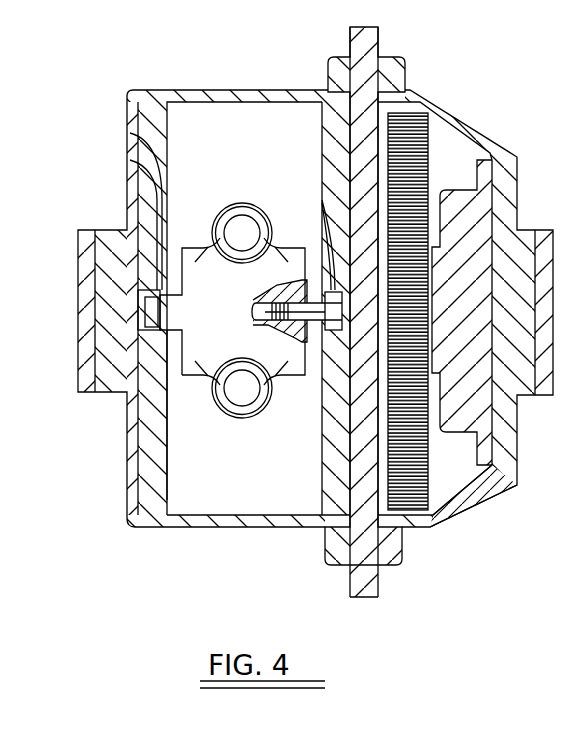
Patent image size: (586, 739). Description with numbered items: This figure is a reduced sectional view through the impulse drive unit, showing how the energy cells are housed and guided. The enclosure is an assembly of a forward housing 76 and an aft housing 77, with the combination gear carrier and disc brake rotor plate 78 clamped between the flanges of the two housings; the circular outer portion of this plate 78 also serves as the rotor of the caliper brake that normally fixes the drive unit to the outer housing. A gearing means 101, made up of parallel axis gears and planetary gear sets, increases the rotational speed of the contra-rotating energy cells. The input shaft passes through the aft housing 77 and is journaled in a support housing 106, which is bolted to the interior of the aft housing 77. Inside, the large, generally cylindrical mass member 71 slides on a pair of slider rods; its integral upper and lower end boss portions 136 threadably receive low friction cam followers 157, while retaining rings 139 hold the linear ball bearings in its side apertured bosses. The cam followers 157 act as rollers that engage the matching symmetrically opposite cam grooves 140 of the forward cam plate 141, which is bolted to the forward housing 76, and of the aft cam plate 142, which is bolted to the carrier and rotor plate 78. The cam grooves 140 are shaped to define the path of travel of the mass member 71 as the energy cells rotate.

The mass member 71 is at (186, 404).
The forward housing 76 is at (185, 528).
The aft housing 77 is at (478, 497).
The combination gear carrier and disc brake rotor plate 78 is at (378, 590).
The gearing means 101 is at (412, 110).
The support housing 106 is at (457, 188).
The end boss portion 136 is at (140, 141).
The retaining ring 139 is at (240, 204).
The cam groove 140 is at (138, 170).
The forward cam plate 141 is at (163, 492).
The aft cam plate 142 is at (322, 488).
The cam follower 157 is at (305, 345).